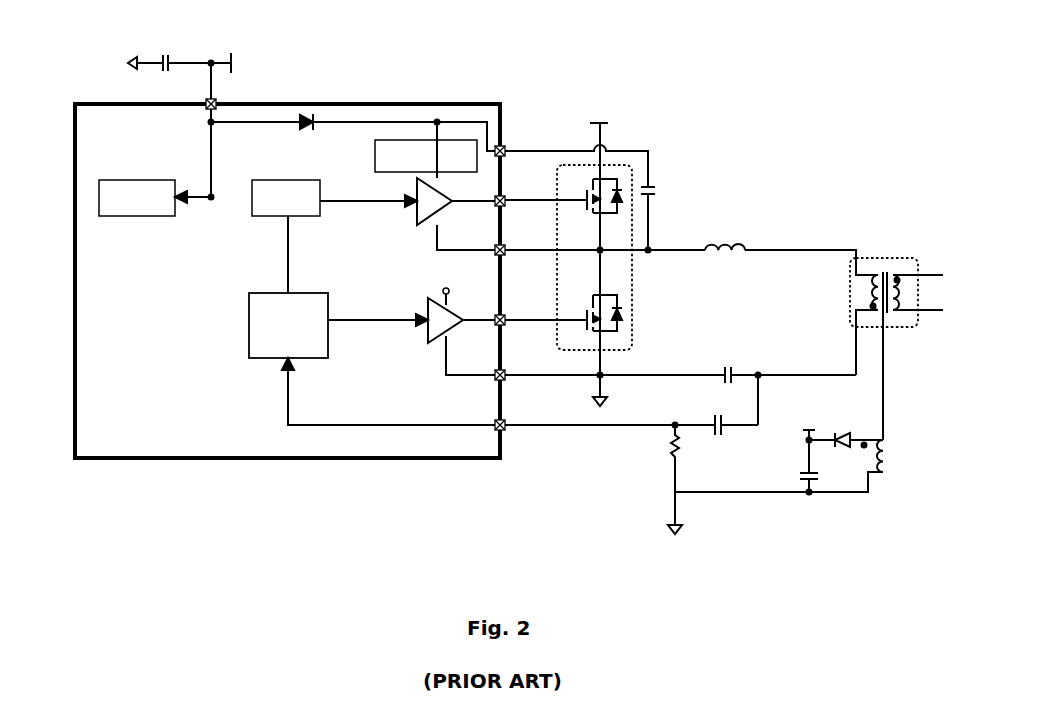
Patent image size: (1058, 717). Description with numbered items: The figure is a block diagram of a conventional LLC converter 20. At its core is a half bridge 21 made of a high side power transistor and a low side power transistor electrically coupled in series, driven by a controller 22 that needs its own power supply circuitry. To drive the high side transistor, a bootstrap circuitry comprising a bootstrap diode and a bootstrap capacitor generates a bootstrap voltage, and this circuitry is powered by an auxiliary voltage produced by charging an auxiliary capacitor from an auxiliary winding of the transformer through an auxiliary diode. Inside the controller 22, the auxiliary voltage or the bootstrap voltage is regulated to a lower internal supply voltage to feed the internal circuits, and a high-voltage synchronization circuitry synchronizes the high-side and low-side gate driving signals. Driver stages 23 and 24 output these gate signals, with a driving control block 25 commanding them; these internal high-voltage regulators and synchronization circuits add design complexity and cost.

The LLC converter 20 is at (108, 52).
The half bridge 21 is at (633, 293).
The controller 22 is at (362, 104).
The high-side driver 23 is at (416, 214).
The low-side driver 24 is at (427, 336).
The driving control block 25 is at (249, 339).